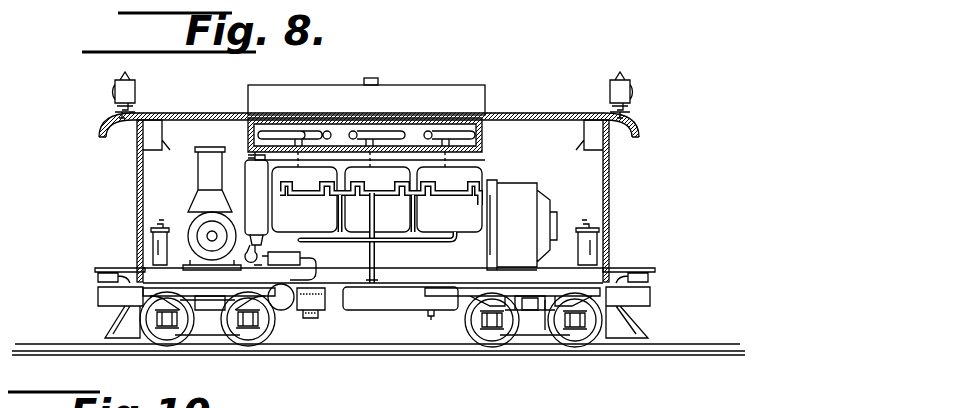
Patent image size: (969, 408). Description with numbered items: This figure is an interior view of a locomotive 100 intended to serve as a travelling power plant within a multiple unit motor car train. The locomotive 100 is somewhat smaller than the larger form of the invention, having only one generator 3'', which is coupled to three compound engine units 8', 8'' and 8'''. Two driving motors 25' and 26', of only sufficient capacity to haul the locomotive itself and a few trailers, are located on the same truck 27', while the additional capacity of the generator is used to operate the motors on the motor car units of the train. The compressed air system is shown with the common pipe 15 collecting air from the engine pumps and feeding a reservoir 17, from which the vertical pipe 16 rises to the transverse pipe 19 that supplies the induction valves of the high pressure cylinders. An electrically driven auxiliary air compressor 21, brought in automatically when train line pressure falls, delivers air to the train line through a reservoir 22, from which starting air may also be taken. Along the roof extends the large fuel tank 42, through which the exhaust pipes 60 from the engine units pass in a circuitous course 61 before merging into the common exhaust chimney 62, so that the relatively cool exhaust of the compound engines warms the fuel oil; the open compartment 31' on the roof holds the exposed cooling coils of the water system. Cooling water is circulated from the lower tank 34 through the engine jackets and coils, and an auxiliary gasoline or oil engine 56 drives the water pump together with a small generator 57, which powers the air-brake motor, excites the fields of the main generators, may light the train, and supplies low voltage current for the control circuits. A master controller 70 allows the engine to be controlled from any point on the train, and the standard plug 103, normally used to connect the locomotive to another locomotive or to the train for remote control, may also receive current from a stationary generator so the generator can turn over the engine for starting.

The locomotive 100 is at (530, 96).
The common exhaust chimney 62 is at (378, 80).
The exhaust pipes 60 is at (272, 129).
The open compartment 31' is at (366, 100).
The circuitous course of exhaust pipes 61 is at (450, 130).
The fuel tank 42 is at (482, 147).
The compound engine unit 8' is at (304, 199).
The compound engine unit 8'' is at (377, 199).
The compound engine unit 8''' is at (449, 199).
The transverse pipe 19 is at (322, 197).
The vertical pipe 16 is at (384, 238).
The common pipe 15 is at (396, 243).
The auxiliary air compressor 21 is at (280, 217).
The auxiliary gasoline or oil engine 56 is at (197, 170).
The small generator 57 is at (192, 220).
The generator 3'' is at (522, 225).
The master controller 70 is at (600, 248).
The standard plug 103 is at (670, 260).
The truck 27' is at (371, 317).
The driving motor 25' is at (514, 341).
The driving motor 26' is at (560, 342).
The reservoir 22 is at (283, 310).
The lower tank 34 is at (325, 312).
The reservoir 17 is at (400, 303).